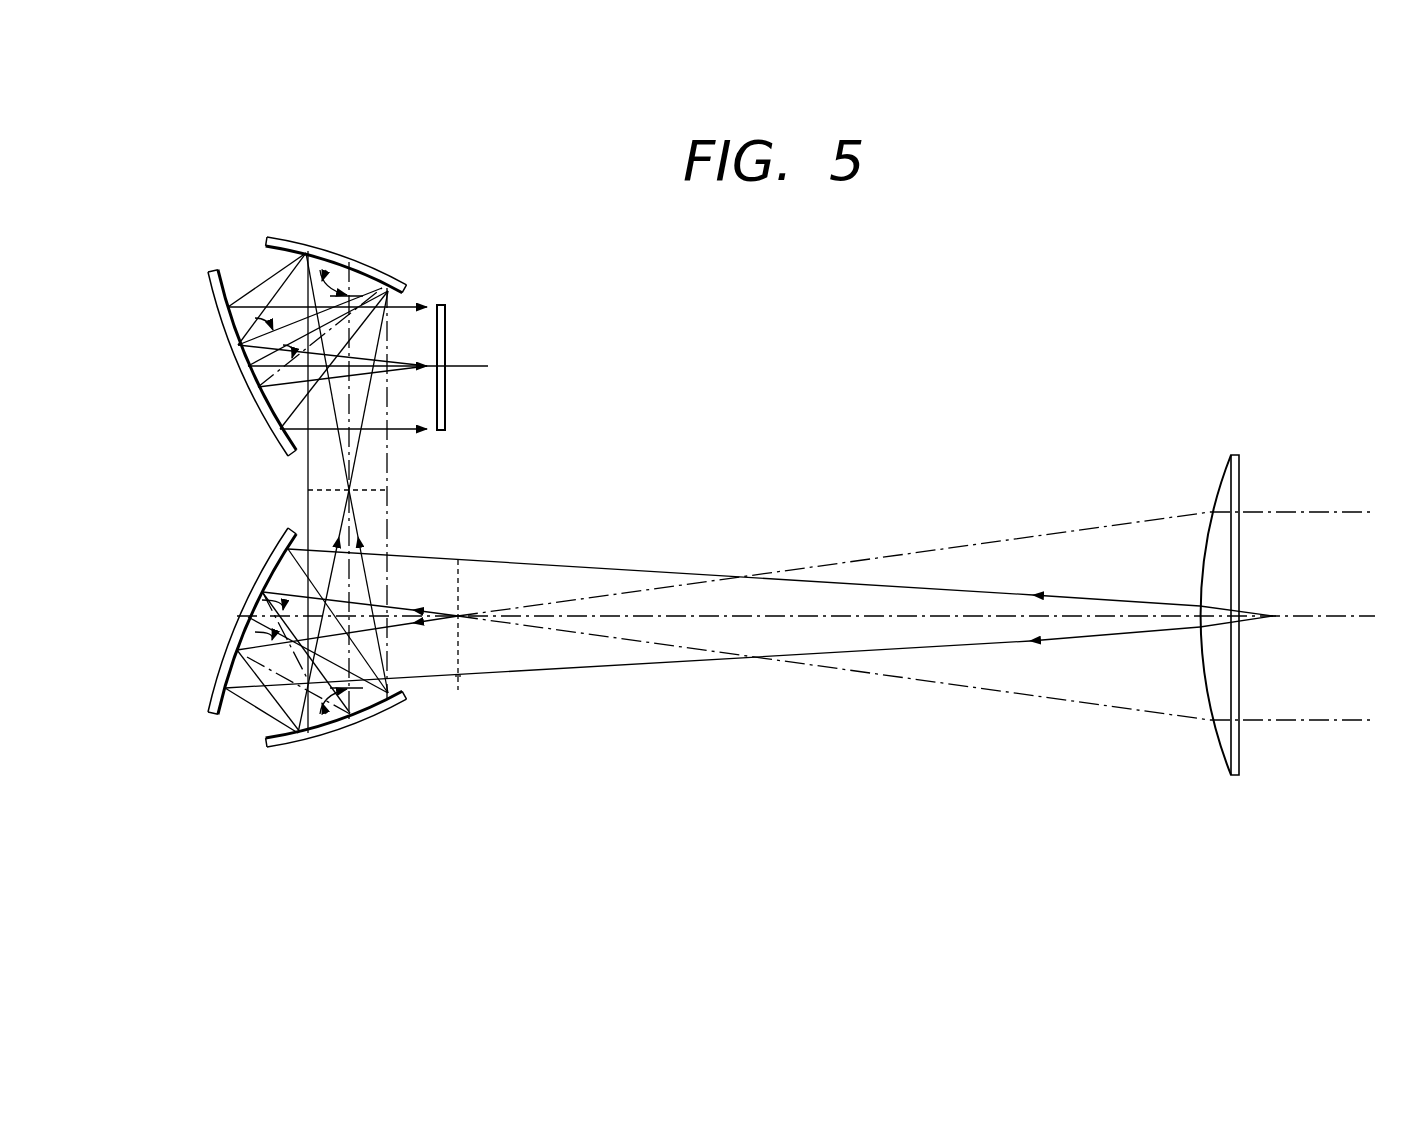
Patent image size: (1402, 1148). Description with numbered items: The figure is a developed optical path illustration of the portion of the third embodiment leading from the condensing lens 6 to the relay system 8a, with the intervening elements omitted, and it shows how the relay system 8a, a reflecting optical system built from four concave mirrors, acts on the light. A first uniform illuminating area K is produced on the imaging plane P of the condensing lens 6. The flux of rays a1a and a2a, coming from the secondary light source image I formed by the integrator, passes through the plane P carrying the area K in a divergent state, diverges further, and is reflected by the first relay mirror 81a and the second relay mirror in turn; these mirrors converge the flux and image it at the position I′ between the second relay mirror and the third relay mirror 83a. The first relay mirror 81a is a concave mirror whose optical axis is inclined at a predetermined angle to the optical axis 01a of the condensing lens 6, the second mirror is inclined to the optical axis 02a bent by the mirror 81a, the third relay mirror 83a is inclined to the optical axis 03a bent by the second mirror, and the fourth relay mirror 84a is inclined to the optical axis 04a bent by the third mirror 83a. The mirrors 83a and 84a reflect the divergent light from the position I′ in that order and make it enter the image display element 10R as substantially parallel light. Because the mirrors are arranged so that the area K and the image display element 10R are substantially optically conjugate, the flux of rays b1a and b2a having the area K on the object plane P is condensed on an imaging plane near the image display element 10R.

The condensing lens 6 is at (1237, 454).
The relay system 8a is at (148, 512).
The image display element 10R is at (447, 318).
The first relay mirror 81a is at (210, 700).
The third relay mirror 83a is at (387, 273).
The fourth relay mirror 84a is at (212, 317).
The optical axis of the condensing lens 01a is at (733, 617).
The optical axis bent by the first relay mirror 02a is at (265, 683).
The optical axis bent by the second relay mirror 03a is at (350, 443).
The optical axis bent by the third relay mirror 04a is at (290, 317).
The ray of light flux from the secondary light source image a1a is at (1107, 599).
The ray of light flux from the secondary light source image a2a is at (1113, 636).
The ray of light flux having the first uniform illuminating area as object b1a is at (400, 592).
The ray of light flux having the first uniform illuminating area as object b2a is at (395, 628).
The first uniform illuminating area K is at (460, 640).
The imaging plane of the condensing lens P is at (458, 680).
The secondary light source image I is at (1273, 622).
The intermediate image position I′ is at (303, 490).